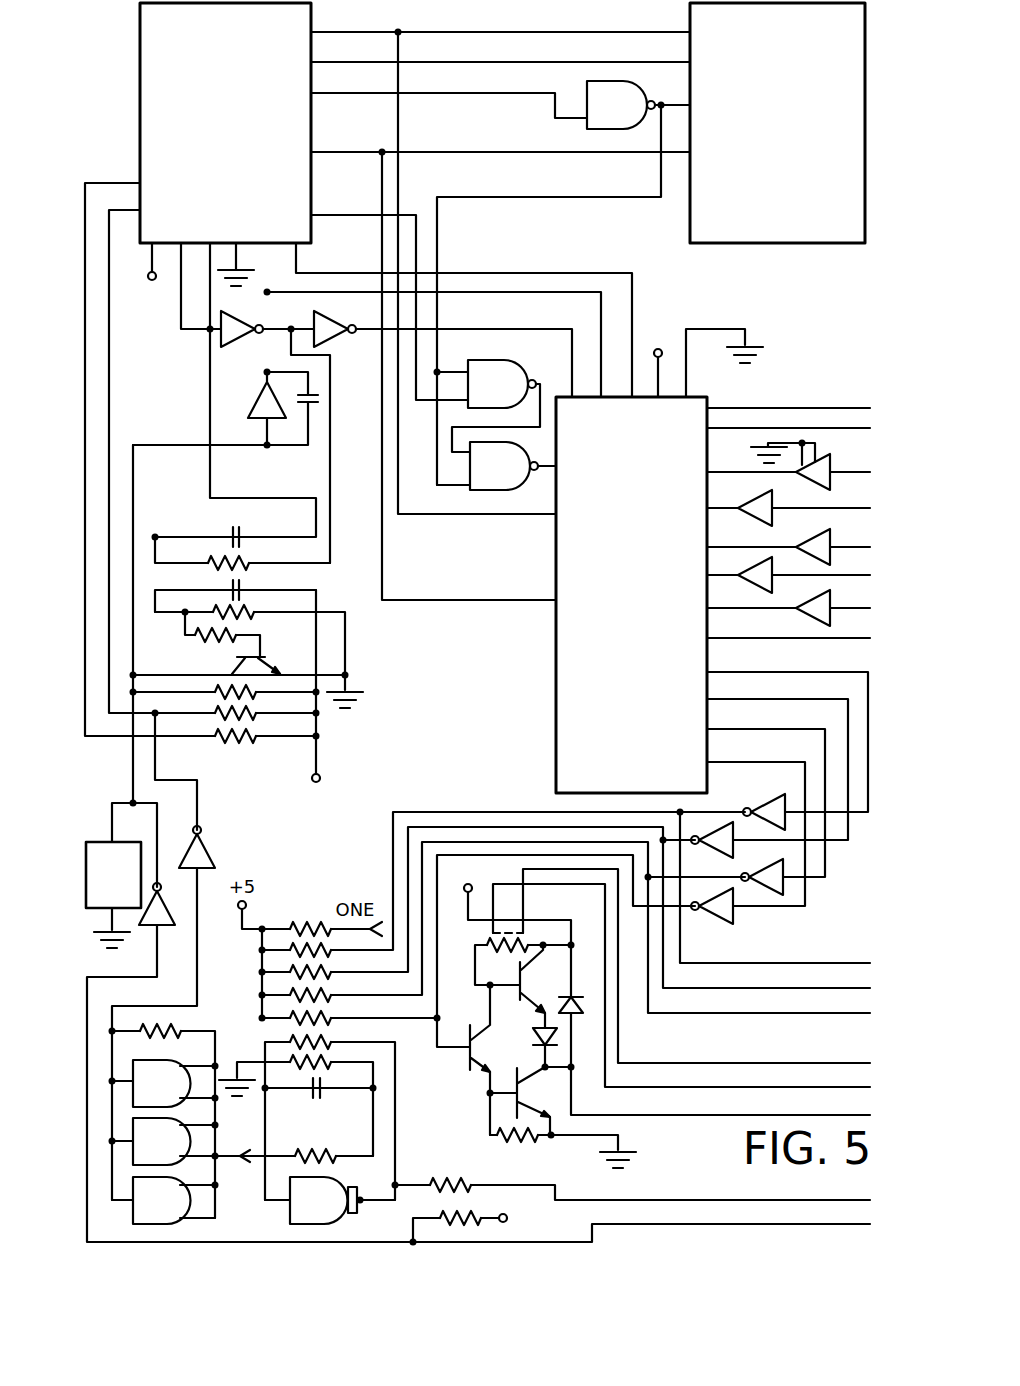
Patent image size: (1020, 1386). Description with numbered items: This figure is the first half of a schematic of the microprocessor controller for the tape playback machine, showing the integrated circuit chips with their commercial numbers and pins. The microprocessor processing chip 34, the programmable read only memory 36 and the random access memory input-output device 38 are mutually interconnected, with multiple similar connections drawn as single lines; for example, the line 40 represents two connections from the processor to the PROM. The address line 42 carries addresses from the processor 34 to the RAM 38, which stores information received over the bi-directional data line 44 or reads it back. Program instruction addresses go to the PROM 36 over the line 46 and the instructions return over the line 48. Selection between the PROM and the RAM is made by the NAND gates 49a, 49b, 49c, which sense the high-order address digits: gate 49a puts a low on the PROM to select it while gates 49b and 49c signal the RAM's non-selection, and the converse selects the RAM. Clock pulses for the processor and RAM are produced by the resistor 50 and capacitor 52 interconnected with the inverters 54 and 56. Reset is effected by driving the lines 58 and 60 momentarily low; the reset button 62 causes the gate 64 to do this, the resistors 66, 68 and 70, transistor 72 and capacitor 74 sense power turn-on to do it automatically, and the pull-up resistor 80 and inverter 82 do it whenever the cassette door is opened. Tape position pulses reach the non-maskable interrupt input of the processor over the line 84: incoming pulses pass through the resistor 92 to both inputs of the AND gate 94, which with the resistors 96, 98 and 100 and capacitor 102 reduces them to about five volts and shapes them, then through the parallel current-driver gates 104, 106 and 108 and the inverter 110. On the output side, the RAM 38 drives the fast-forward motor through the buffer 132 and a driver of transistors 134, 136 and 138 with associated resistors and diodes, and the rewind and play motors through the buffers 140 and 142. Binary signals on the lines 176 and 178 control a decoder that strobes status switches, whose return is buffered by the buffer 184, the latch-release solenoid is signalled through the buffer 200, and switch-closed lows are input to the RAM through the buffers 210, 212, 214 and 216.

The microprocessor processing chip 34 is at (211, 199).
The programmable read only memory 36 is at (763, 181).
The random access memory input-output device 38 is at (617, 730).
The line 40 is at (509, 60).
The address line 42 is at (402, 128).
The bi-directional data line 44 is at (415, 603).
The line 46 is at (509, 30).
The line 48 is at (602, 154).
The NAND gate 49a is at (573, 91).
The NAND gate 49b is at (508, 365).
The NAND gate 49c is at (468, 489).
The resistor 50 is at (250, 558).
The capacitor 52 is at (243, 536).
The inverter 54 is at (240, 350).
The inverter 56 is at (338, 318).
The line 58 is at (268, 322).
The line 60 is at (532, 296).
The reset button 62 is at (104, 842).
The gate 64 is at (250, 399).
The resistors 66 is at (276, 700).
The resistor 68 is at (207, 638).
The resistor 70 is at (262, 622).
The transistor 72 is at (276, 658).
The capacitor 74 is at (248, 588).
The pull-up resistor 80 is at (454, 1218).
The inverter 82 is at (168, 936).
The line 84 is at (112, 330).
The resistor 92 is at (454, 1184).
The AND gate 94 is at (291, 1214).
The resistor 96 is at (331, 1034).
The resistor 98 is at (339, 1064).
The resistor 100 is at (312, 1154).
The capacitor 102 is at (325, 1094).
The gate 104 is at (168, 1056).
The gate 106 is at (200, 1136).
The gate 108 is at (140, 1216).
The inverter 110 is at (206, 848).
The buffer 132 is at (742, 914).
The transistor 134 is at (487, 1046).
The transistor 136 is at (536, 972).
The transistor 138 is at (537, 1086).
The buffer 140 is at (803, 889).
The buffer 142 is at (716, 818).
The line 176 is at (819, 407).
The line 178 is at (819, 429).
The buffer 184 is at (820, 606).
The buffer 200 is at (748, 795).
The buffer 210 is at (830, 448).
The buffer 212 is at (768, 504).
The buffer 214 is at (820, 539).
The buffer 216 is at (768, 571).